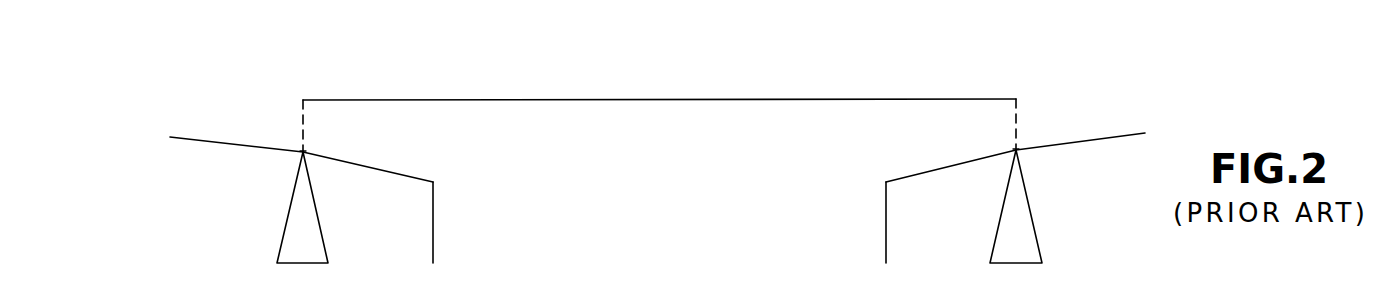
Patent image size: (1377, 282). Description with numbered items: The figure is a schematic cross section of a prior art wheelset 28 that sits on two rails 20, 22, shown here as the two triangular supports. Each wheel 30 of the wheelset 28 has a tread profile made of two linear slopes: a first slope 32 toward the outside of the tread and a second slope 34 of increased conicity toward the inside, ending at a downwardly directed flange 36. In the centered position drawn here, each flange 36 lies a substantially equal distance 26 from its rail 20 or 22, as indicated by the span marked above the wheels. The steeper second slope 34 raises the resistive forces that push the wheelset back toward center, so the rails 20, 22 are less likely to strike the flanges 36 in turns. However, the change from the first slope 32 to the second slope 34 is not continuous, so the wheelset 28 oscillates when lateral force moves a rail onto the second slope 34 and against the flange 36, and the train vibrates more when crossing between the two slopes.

The rail 20 is at (1032, 217).
The rail 22 is at (287, 222).
The distance 26 is at (659, 76).
The wheelset 28 is at (960, 69).
The wheel 30 is at (210, 140).
The first slope 32 is at (263, 148).
The second slope 34 is at (408, 177).
The flange 36 is at (434, 222).